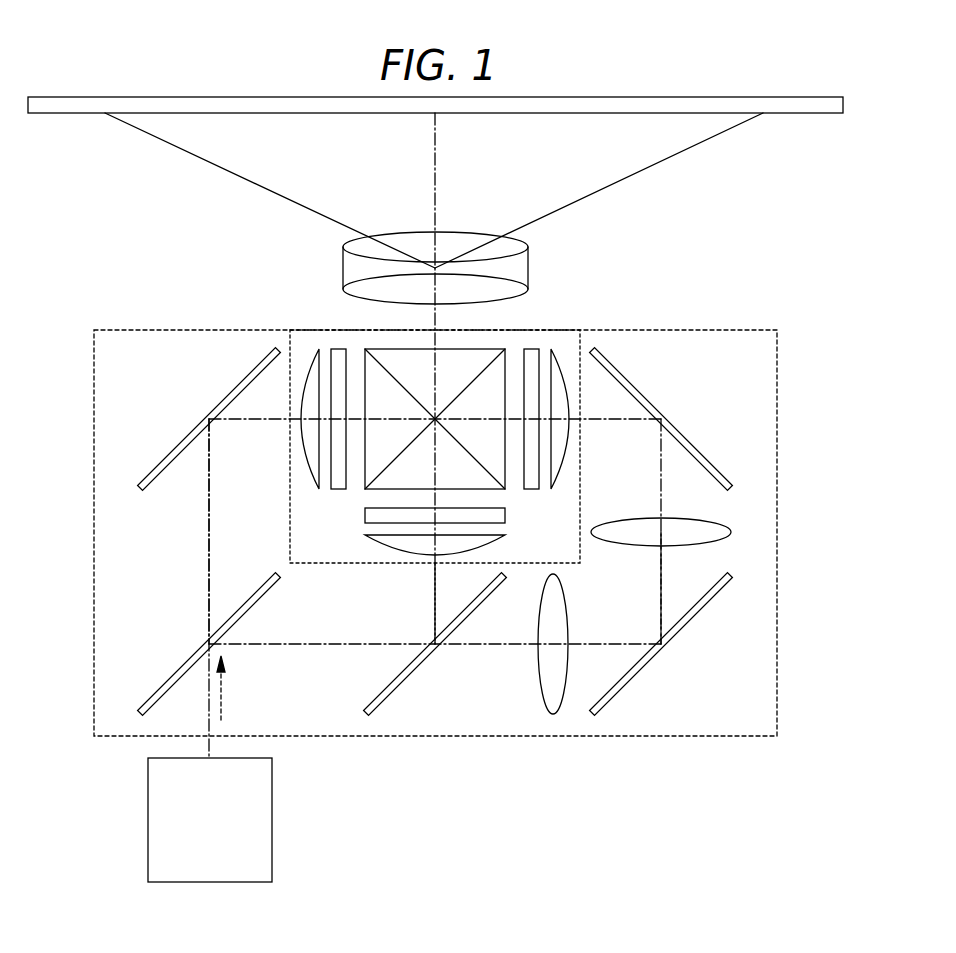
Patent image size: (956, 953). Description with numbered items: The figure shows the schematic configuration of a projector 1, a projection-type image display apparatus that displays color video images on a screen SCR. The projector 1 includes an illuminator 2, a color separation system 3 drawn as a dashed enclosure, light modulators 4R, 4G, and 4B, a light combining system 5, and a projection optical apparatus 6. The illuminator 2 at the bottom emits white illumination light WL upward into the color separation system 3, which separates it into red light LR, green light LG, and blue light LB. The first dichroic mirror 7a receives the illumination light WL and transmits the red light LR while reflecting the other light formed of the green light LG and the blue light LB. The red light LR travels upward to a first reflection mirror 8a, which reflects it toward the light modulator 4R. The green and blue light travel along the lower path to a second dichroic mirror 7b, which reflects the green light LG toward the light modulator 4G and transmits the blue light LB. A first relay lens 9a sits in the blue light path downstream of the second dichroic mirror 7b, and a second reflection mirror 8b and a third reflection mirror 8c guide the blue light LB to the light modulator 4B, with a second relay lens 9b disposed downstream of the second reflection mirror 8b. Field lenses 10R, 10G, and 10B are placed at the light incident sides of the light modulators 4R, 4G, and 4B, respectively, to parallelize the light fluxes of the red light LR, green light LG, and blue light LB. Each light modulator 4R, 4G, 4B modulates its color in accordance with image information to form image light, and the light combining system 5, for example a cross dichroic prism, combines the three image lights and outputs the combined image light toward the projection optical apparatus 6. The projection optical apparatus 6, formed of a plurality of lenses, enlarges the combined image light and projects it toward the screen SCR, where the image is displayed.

The projector 1 is at (788, 302).
The illuminator 2 is at (272, 815).
The color separation system 3 is at (93, 477).
The light modulator 4R is at (339, 350).
The light modulator 4G is at (365, 519).
The light modulator 4B is at (531, 350).
The light combining system 5 is at (458, 358).
The projection optical apparatus 6 is at (415, 245).
The first dichroic mirror 7a is at (172, 675).
The second dichroic mirror 7b is at (413, 678).
The first reflection mirror 8a is at (183, 435).
The second reflection mirror 8b is at (688, 628).
The third reflection mirror 8c is at (690, 437).
The first relay lens 9a is at (537, 665).
The second relay lens 9b is at (718, 523).
The field lens 10R is at (313, 350).
The field lens 10G is at (365, 541).
The field lens 10B is at (557, 350).
The screen SCR is at (810, 115).
The illumination light WL is at (222, 700).
The red light LR is at (209, 553).
The green light LG is at (433, 602).
The blue light LB is at (660, 590).